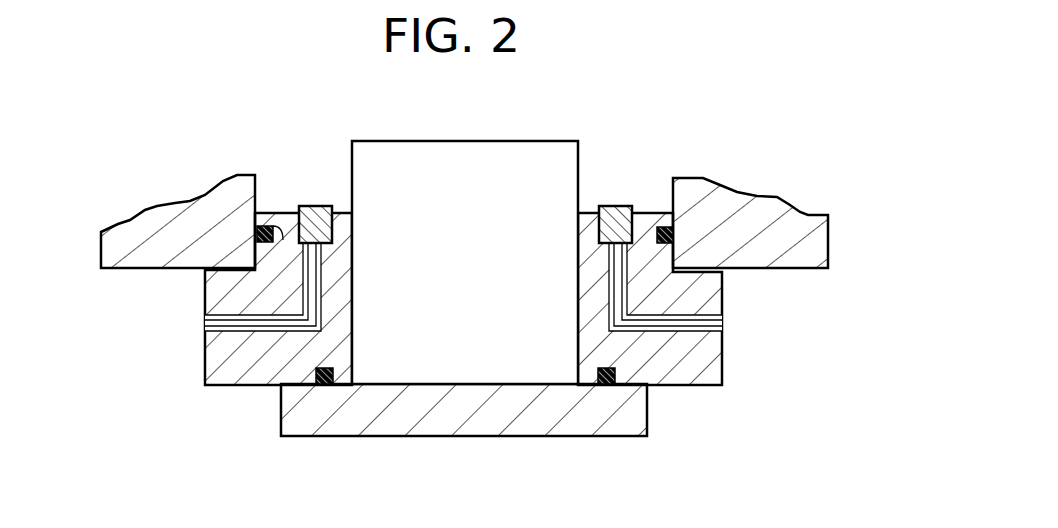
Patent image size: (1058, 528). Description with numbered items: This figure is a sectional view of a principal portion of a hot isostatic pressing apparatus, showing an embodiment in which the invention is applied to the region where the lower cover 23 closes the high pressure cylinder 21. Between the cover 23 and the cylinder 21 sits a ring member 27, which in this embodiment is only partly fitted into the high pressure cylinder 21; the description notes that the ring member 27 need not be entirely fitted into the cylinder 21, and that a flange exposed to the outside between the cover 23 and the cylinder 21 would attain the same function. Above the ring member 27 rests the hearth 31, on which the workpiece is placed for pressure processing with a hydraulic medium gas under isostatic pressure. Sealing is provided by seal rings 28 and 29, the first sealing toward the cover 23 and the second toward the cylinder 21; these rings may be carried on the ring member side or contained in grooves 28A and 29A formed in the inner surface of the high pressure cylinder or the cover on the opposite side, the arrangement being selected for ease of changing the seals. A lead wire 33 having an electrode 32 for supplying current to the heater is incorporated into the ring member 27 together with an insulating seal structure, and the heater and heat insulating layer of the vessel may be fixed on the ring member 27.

The high pressure cylinder 21 is at (762, 220).
The lower cover 23 is at (625, 413).
The ring member 27 is at (703, 362).
The seal ring 28 is at (603, 386).
The groove 28A is at (323, 386).
The seal ring 29 is at (665, 213).
The groove 29A is at (283, 213).
The hearth 31 is at (545, 152).
The electrode 32 is at (618, 207).
The lead wire 33 is at (723, 323).